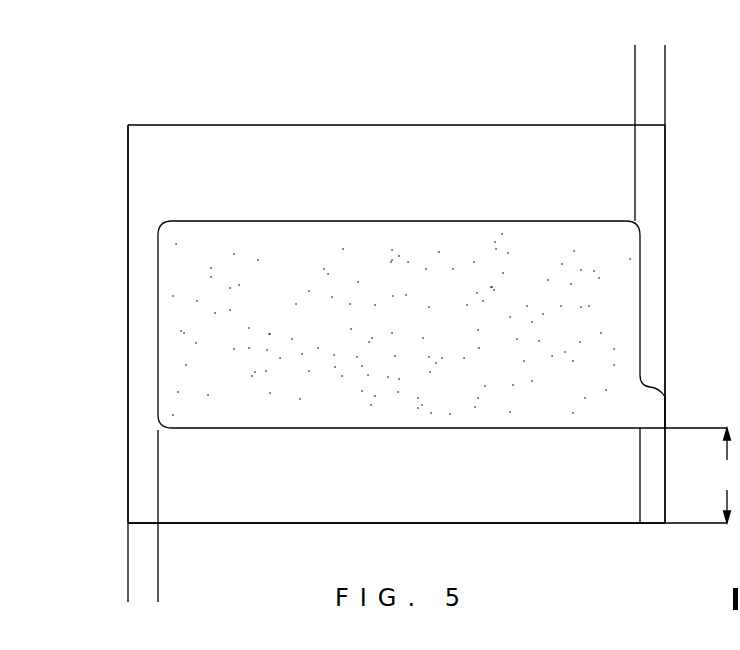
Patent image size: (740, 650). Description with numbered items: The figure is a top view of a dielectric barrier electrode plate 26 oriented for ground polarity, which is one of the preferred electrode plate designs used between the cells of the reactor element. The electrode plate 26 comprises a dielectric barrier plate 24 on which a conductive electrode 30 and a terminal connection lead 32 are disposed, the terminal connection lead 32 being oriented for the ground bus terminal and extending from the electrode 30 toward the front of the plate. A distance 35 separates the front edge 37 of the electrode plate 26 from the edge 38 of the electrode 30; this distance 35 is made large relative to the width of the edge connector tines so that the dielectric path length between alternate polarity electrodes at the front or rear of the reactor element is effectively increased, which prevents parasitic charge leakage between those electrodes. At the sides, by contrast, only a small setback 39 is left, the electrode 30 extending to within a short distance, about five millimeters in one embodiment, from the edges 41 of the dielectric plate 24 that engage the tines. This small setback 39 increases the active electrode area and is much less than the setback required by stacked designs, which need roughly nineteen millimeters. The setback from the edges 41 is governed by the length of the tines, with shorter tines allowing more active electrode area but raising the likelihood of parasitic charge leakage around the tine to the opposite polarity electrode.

The electrode plate 26 is at (149, 63).
The edges of the dielectric plate 41 is at (127, 163).
The small setback 39 is at (702, 53).
The dielectric barrier plate 24 is at (147, 232).
The electrode 30 is at (177, 368).
The edge of the electrode 38 is at (498, 428).
The front edge 37 is at (573, 523).
The terminal connection lead 32 is at (649, 502).
The distance 35 is at (702, 475).